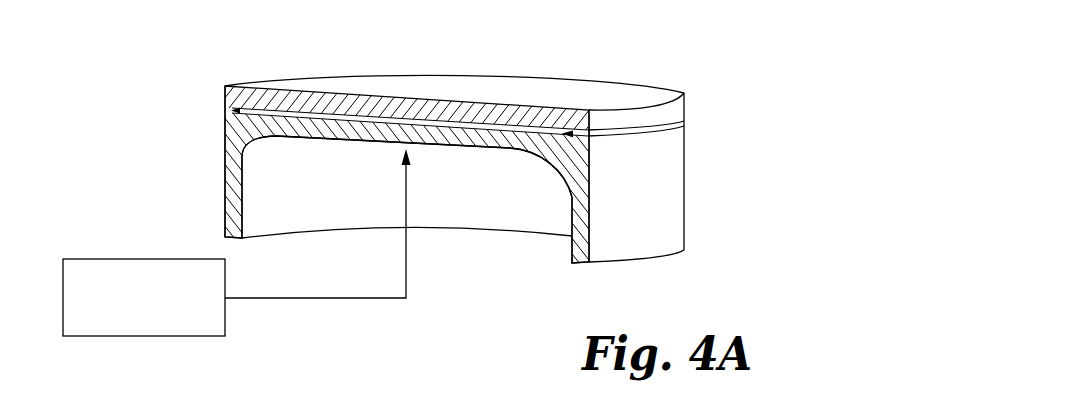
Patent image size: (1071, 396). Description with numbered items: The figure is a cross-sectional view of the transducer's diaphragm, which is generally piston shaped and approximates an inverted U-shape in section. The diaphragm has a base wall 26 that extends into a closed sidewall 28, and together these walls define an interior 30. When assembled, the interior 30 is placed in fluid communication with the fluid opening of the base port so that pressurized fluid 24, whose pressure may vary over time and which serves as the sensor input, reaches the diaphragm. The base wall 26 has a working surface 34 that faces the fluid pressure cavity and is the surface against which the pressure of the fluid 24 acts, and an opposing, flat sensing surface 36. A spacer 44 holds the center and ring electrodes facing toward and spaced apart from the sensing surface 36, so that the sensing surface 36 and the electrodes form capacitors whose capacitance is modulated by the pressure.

The fluid 24 is at (115, 259).
The base wall 26 is at (507, 144).
The closed sidewall 28 is at (224, 177).
The interior 30 is at (314, 188).
The working surface 34 is at (453, 147).
The sensing surface 36 is at (425, 124).
The spacer 44 is at (692, 119).